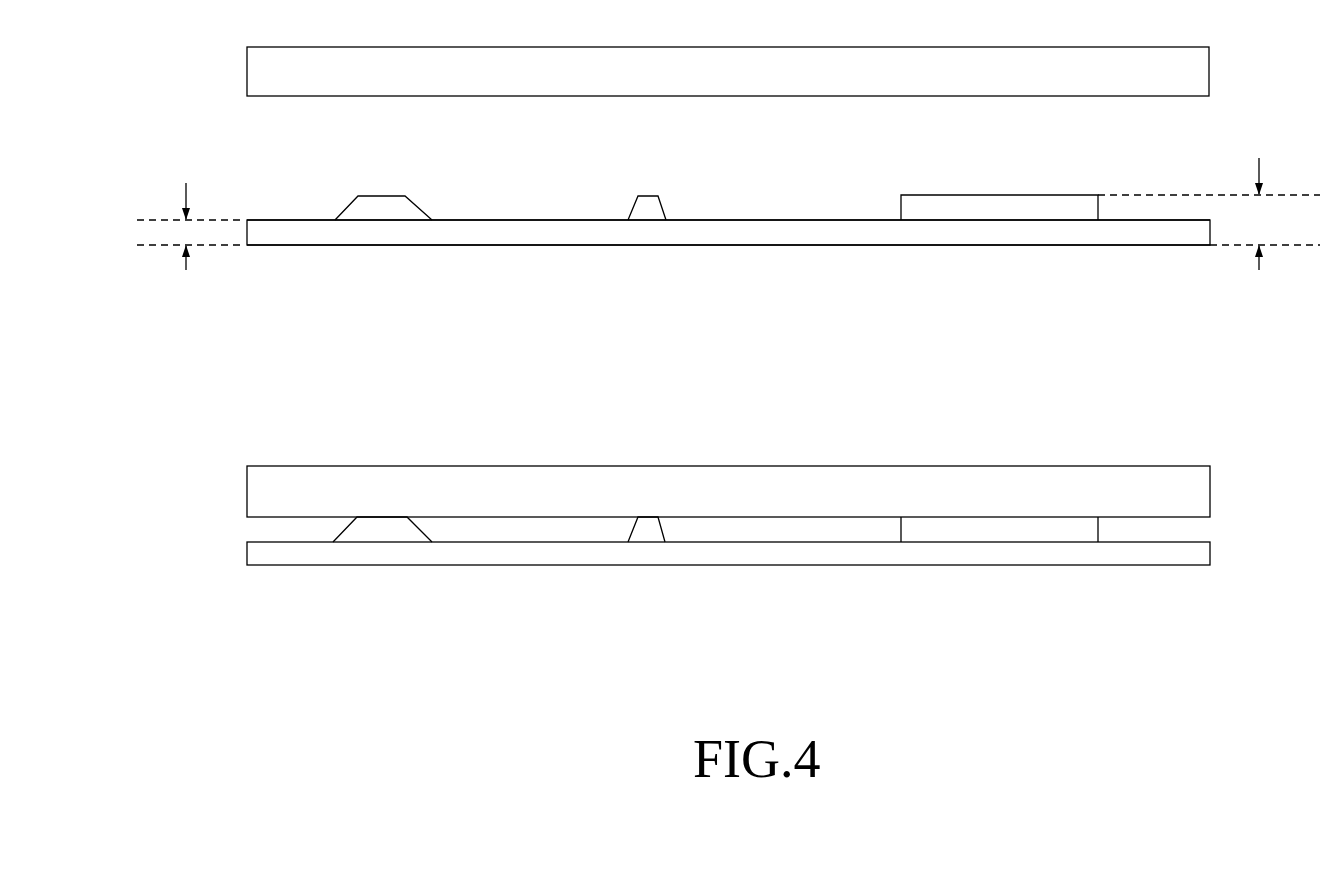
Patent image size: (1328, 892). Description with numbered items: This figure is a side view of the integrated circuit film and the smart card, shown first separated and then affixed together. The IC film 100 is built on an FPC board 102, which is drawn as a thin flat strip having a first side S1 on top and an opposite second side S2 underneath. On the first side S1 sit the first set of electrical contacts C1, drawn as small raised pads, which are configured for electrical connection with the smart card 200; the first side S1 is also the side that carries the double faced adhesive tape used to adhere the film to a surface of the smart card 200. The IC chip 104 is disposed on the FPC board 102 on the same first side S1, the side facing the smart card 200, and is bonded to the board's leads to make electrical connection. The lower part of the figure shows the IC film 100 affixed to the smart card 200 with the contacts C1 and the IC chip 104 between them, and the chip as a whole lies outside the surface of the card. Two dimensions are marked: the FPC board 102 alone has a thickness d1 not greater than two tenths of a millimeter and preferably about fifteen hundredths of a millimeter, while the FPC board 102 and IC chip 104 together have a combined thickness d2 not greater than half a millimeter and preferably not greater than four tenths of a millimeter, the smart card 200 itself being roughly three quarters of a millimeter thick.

The IC film 100 is at (777, 378).
The FPC board 102 is at (1132, 245).
The IC chip 104 is at (995, 195).
The smart card 200 is at (1209, 72).
The first set of electrical contacts C1 is at (400, 196).
The first side S1 is at (280, 220).
The second side S2 is at (270, 245).
The thickness of the FPC board d1 is at (170, 226).
The combined thickness d2 is at (1209, 214).